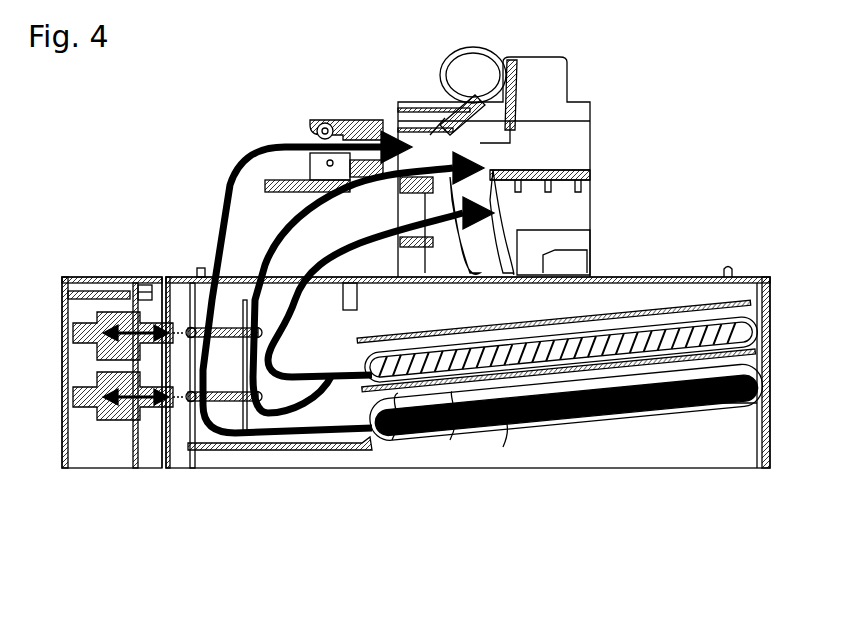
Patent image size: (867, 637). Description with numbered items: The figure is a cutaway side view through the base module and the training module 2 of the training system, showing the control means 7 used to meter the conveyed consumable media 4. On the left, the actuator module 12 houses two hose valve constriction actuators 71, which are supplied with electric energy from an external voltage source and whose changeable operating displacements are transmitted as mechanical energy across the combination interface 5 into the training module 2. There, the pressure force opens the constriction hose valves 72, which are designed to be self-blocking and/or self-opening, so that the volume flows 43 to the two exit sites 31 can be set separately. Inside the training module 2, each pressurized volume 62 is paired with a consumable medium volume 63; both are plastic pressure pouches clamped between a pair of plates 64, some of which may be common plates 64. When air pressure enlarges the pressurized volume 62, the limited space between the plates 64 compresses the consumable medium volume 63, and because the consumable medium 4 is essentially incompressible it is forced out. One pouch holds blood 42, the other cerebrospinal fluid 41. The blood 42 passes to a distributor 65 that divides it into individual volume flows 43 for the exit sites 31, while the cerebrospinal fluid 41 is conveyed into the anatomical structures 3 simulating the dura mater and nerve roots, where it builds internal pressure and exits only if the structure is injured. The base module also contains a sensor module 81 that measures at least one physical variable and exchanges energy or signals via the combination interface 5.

The training module 2 is at (772, 563).
The anatomical structures 3 is at (590, 102).
The consumable medium 4 is at (565, 371).
The combination interface 5 is at (175, 277).
The control means 7 is at (245, 505).
The actuator module 12 is at (87, 445).
The exit sites 31 is at (450, 110).
The cerebrospinal fluid 41 is at (667, 440).
The blood 42 is at (547, 440).
The volume flows 43 is at (247, 163).
The pressurized volume 62 is at (628, 325).
The consumable medium volume 63 is at (565, 371).
The plates 64 is at (392, 440).
The distributor 65 is at (332, 372).
The hose valve constriction actuator 71 is at (97, 305).
The constriction hose valve 72 is at (228, 290).
The sensor module 81 is at (67, 452).